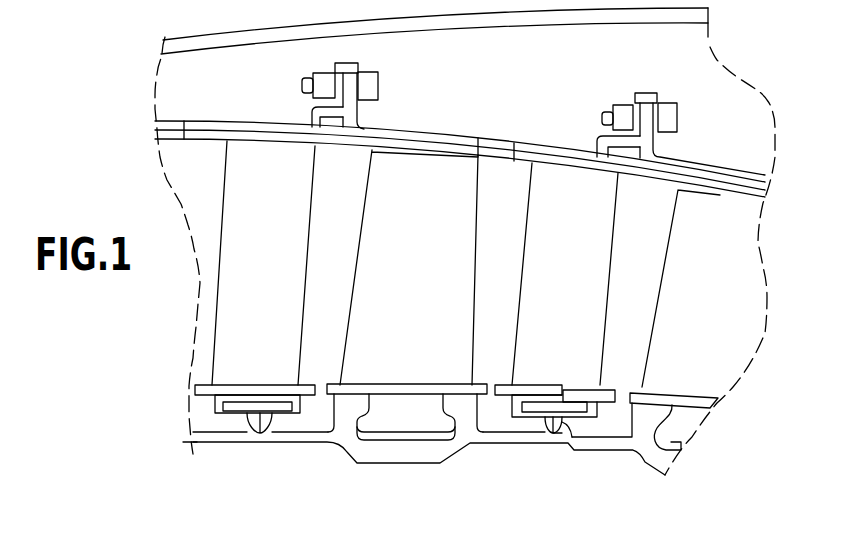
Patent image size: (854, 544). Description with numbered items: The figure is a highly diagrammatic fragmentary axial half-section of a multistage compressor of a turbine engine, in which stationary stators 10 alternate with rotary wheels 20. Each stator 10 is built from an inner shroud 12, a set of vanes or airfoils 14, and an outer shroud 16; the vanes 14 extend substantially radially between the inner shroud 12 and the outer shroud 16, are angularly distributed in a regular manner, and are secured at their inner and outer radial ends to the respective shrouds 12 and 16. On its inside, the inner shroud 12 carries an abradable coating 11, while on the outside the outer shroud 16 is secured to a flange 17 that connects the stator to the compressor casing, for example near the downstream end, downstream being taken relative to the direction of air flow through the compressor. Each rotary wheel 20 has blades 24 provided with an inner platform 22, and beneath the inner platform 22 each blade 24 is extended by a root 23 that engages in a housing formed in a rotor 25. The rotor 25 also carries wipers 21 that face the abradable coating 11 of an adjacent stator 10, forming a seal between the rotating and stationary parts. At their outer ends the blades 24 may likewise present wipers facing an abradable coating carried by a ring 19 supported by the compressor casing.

The stator 10 is at (220, 166).
The abradable coating 11 is at (568, 388).
The inner shroud 12 is at (607, 388).
The vane 14 is at (580, 277).
The outer shroud 16 is at (622, 173).
The flange 17 is at (606, 140).
The ring 19 is at (478, 150).
The rotary wheel 20 is at (418, 188).
The wiper 21 is at (567, 432).
The inner platform 22 is at (478, 385).
The root 23 is at (408, 408).
The blade 24 is at (450, 240).
The rotor 25 is at (410, 455).